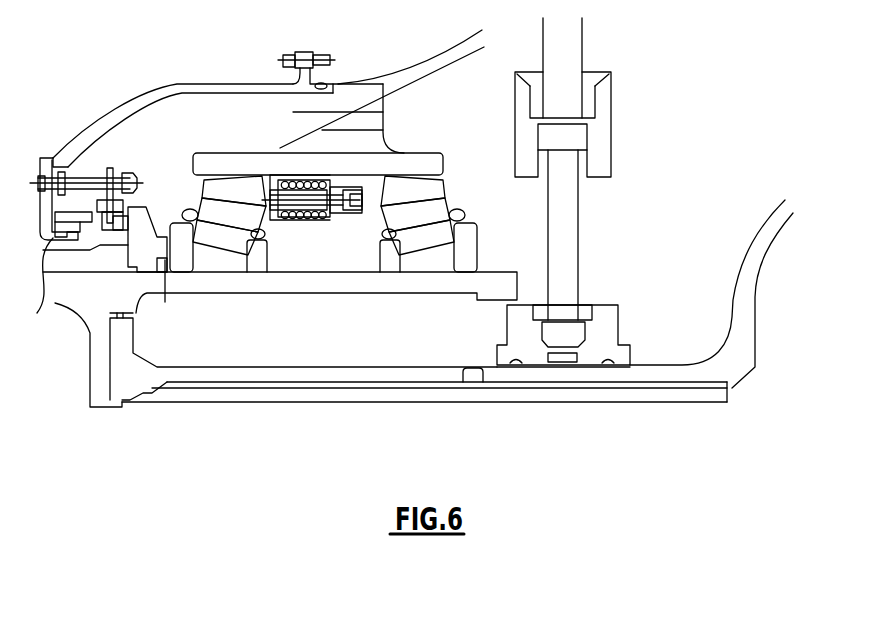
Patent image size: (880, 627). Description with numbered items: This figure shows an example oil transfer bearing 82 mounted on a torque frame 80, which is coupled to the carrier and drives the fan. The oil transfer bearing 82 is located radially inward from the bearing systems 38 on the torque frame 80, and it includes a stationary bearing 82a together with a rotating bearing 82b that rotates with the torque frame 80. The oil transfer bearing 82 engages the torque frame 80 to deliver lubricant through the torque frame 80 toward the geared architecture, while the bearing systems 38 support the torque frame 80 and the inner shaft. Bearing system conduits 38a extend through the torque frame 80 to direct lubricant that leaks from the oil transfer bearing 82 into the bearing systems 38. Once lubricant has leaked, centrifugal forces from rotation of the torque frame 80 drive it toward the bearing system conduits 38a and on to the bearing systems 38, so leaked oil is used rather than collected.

The bearing systems 38 is at (203, 207).
The bearing system conduits 38a is at (197, 258).
The torque frame 80 is at (750, 350).
The oil transfer bearing 82 is at (603, 228).
The stationary bearing 82a is at (585, 306).
The rotating bearing 82b is at (563, 375).